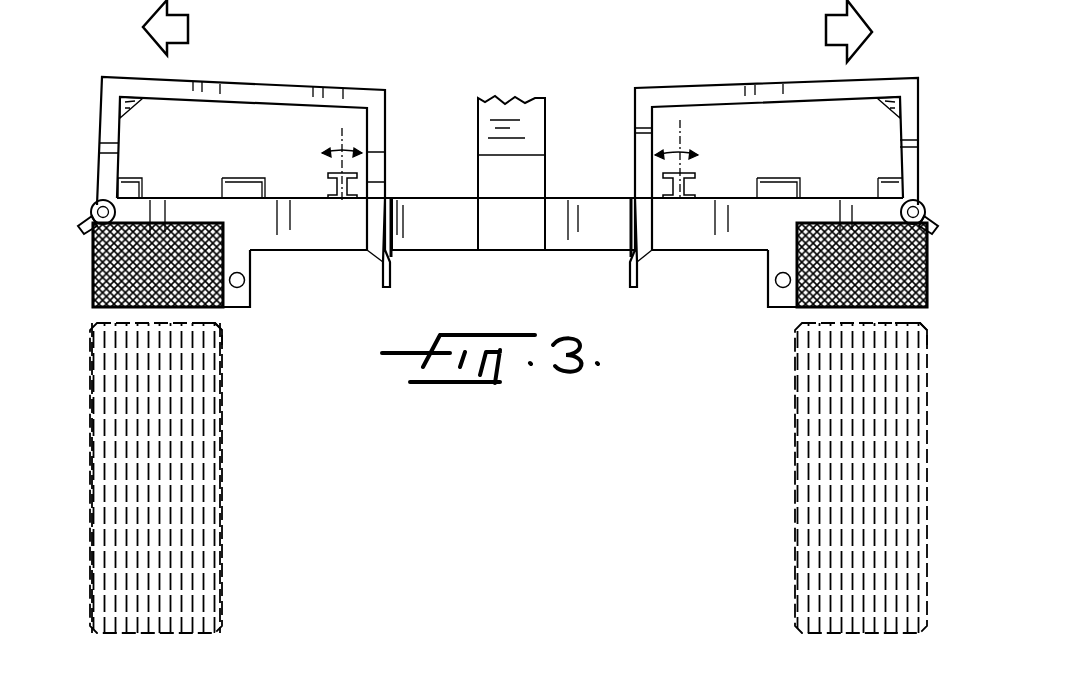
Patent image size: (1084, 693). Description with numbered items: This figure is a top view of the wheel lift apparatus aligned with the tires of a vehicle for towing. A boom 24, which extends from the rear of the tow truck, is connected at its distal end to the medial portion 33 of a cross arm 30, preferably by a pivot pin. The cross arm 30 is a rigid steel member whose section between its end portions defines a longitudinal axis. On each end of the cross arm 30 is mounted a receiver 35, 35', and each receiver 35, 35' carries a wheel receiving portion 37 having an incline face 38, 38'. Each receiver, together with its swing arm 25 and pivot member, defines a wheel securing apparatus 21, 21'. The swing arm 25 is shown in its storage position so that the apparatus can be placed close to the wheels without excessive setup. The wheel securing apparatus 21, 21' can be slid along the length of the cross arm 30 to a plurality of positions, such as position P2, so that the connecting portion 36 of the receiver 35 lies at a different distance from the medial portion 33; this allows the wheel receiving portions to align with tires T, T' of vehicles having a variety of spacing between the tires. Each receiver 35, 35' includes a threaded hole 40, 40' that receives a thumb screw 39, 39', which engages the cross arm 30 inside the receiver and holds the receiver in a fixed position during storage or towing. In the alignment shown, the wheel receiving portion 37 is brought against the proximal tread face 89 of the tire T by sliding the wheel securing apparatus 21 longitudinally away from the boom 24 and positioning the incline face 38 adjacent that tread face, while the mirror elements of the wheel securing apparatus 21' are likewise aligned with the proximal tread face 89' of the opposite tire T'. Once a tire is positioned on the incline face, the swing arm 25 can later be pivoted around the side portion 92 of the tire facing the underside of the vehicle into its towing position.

The swing arm 25 is at (92, 107).
The wheel receiving portion 37 is at (77, 256).
The thumb screw 39 is at (312, 162).
The hole 40 is at (314, 178).
The connecting portion 36 is at (396, 195).
The cross arm 30 is at (442, 225).
The boom 24 is at (533, 127).
The medial portion 33 is at (523, 250).
The position P2 is at (400, 255).
The receiver 35 is at (308, 279).
The wheel securing apparatus 21 is at (215, 306).
The incline face 38 is at (185, 283).
The proximal tread face 89 is at (234, 363).
The tire T is at (176, 478).
The side portion 92 is at (220, 547).
The thumb screw 39' is at (705, 160).
The hole 40' is at (708, 177).
The incline face 38' is at (884, 241).
The proximal tread face 89' is at (933, 343).
The receiver 35' is at (710, 289).
The wheel securing apparatus 21' is at (828, 315).
The tire T' is at (826, 478).